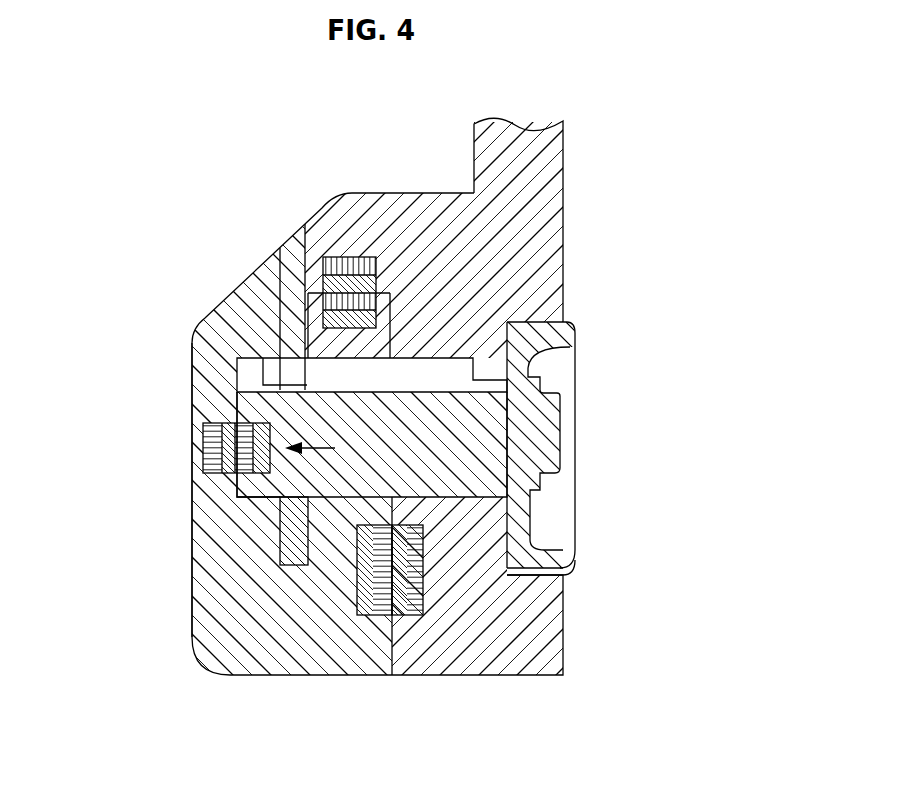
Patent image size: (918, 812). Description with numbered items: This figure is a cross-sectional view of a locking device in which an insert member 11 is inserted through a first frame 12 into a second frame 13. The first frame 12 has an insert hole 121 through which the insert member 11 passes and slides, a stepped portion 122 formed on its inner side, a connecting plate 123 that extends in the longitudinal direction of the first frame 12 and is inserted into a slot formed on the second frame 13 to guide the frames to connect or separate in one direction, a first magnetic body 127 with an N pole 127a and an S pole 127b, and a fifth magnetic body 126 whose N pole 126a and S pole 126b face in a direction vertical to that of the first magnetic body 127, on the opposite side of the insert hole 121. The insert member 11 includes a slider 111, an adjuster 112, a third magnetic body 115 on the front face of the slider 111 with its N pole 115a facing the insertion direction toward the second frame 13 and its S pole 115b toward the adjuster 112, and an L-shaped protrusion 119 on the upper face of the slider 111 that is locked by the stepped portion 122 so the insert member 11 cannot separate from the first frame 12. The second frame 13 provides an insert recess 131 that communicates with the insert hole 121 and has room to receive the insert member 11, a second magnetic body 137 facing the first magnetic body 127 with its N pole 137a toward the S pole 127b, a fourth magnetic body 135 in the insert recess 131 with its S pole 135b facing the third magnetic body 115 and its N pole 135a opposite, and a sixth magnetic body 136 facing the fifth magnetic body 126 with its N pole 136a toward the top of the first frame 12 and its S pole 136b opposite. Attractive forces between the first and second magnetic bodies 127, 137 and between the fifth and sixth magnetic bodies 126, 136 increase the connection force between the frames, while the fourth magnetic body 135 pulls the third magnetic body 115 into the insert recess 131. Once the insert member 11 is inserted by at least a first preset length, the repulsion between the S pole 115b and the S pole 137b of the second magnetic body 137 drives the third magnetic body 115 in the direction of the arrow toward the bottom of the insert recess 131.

The insert member 11 is at (587, 498).
The slider 111 is at (455, 452).
The adjuster 112 is at (565, 562).
The third magnetic body 115 is at (100, 493).
The N pole 115a is at (258, 478).
The S pole 115b is at (260, 498).
The protrusion 119 is at (247, 367).
The first frame 12 is at (458, 163).
The insert hole 121 is at (490, 400).
The stepped portion 122 is at (486, 343).
The connecting plate 123 is at (287, 552).
The fifth magnetic body 126 is at (643, 212).
The N pole 126a is at (378, 268).
The S pole 126b is at (378, 295).
The first magnetic body 127 is at (565, 743).
The N pole 127a is at (412, 618).
The S pole 127b is at (396, 617).
The second frame 13 is at (182, 613).
The insert recess 131 is at (272, 356).
The fourth magnetic body 135 is at (100, 367).
The N pole 135a is at (207, 427).
The S pole 135b is at (228, 425).
The sixth magnetic body 136 is at (337, 160).
The N pole 136a is at (330, 320).
The S pole 136b is at (283, 358).
The second magnetic body 137 is at (393, 743).
The N pole 137a is at (384, 617).
The S pole 137b is at (372, 617).